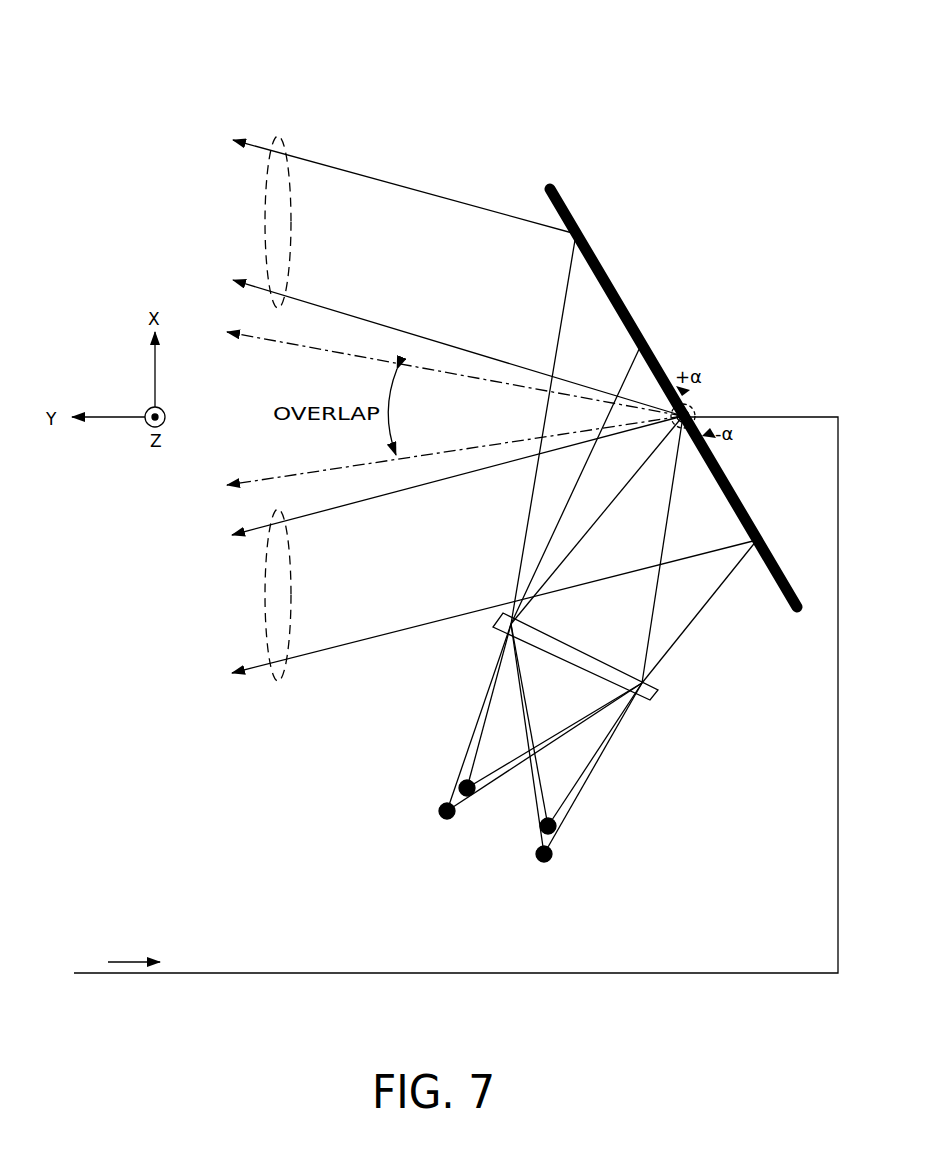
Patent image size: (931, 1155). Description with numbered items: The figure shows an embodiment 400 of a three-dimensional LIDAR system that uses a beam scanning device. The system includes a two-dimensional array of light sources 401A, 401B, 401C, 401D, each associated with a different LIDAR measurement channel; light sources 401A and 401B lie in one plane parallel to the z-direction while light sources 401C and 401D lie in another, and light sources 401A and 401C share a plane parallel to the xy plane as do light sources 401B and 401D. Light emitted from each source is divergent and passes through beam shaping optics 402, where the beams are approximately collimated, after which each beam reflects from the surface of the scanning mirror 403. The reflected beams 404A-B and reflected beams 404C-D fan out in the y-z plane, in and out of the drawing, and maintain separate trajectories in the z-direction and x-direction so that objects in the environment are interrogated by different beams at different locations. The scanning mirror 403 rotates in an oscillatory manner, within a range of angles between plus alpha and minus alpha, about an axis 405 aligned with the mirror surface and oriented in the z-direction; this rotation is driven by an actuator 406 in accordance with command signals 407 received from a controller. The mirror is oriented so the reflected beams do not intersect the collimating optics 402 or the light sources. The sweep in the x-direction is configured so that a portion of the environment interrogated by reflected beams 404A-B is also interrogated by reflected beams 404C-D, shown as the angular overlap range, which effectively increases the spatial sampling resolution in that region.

The embodiment of a 3-D LIDAR system 400 is at (118, 70).
The light source 401A is at (441, 816).
The light source 401B is at (459, 787).
The light source 401C is at (539, 862).
The light source 401D is at (556, 828).
The beam shaping optics 402 is at (655, 695).
The scanning mirror 403 is at (620, 300).
The reflected beams 404A-B is at (265, 582).
The reflected beams 404C-D is at (265, 212).
The axis 405 is at (692, 404).
The actuator 406 is at (696, 414).
The command signals 407 is at (133, 960).